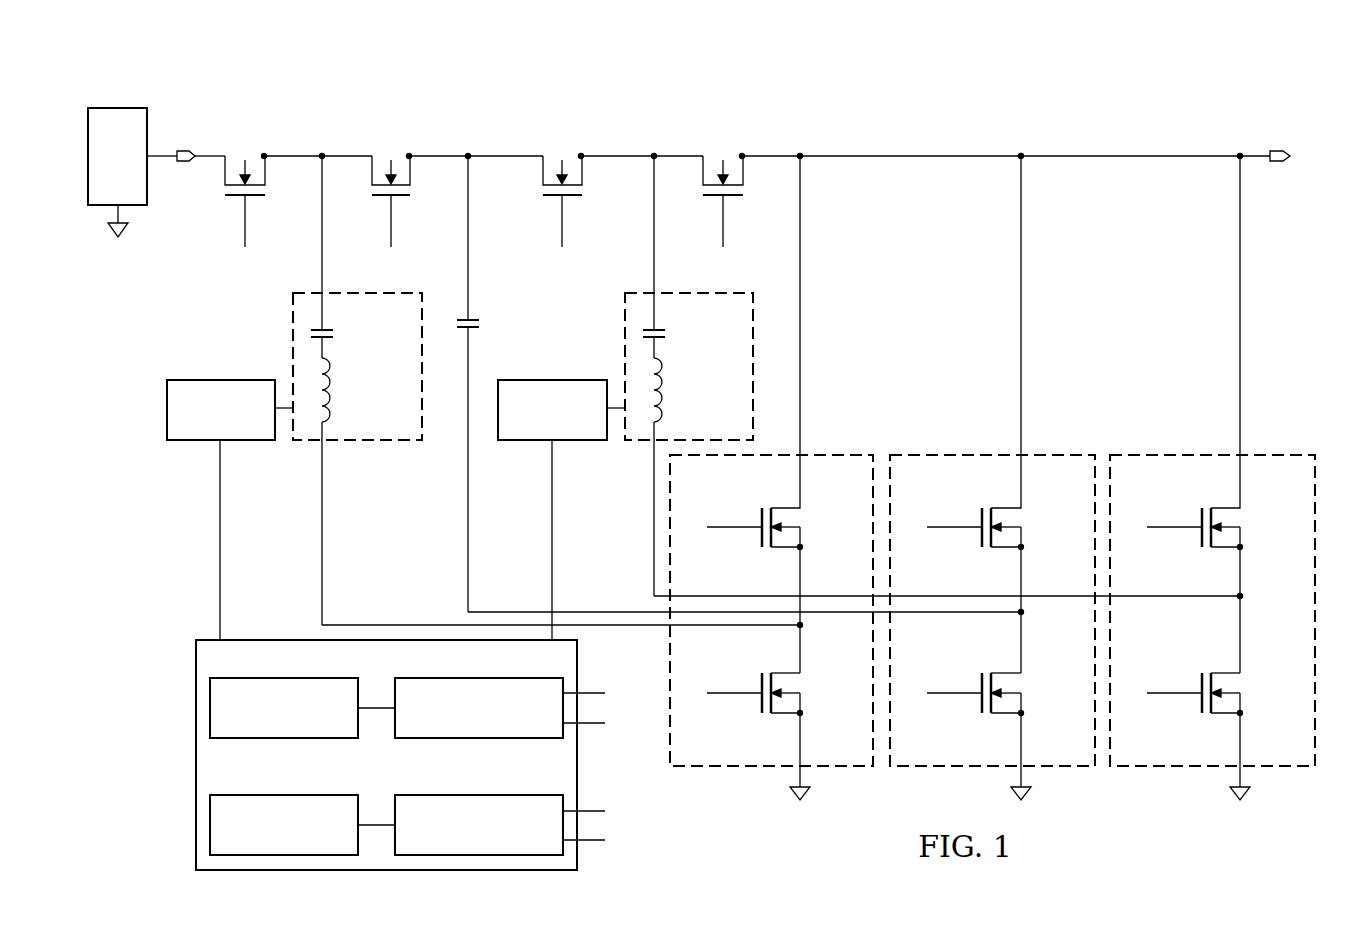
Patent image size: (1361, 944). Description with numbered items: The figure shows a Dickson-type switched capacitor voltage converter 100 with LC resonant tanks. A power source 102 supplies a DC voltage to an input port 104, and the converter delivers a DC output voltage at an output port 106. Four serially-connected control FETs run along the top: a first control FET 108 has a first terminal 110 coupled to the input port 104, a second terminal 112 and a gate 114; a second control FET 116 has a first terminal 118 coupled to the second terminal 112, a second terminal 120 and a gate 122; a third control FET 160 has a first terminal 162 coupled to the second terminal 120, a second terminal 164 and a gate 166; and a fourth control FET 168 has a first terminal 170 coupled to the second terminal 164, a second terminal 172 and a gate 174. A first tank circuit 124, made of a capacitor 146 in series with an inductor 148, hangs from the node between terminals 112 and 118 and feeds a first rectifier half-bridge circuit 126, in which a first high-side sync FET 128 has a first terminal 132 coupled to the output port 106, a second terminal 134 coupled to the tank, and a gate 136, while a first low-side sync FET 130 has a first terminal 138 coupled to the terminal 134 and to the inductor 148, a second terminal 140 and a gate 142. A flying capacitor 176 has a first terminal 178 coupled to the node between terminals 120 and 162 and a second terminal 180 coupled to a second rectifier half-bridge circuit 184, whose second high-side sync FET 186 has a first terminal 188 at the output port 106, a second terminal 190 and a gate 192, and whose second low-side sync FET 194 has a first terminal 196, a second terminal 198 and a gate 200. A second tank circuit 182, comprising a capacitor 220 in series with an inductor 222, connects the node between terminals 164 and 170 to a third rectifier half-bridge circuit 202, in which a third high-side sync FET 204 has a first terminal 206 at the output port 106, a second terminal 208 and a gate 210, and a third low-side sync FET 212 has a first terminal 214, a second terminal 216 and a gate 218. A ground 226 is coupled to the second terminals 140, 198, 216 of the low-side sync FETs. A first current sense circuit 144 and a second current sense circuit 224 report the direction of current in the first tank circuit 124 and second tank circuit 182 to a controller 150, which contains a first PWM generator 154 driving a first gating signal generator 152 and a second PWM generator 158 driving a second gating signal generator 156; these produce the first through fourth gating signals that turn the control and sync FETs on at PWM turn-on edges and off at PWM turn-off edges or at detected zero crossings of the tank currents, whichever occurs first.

The switched capacitor voltage converter 100 is at (1083, 120).
The power source 102 is at (114, 108).
The input port 104 is at (186, 166).
The output port 106 is at (1272, 151).
The first control FET 108 is at (236, 200).
The first terminal of first control FET 110 is at (216, 154).
The second terminal of first control FET 112 is at (276, 154).
The gate of first control FET 114 is at (246, 218).
The second control FET 116 is at (383, 200).
The first terminal of second control FET 118 is at (360, 154).
The second terminal of second control FET 120 is at (421, 154).
The gate of second control FET 122 is at (393, 218).
The first tank circuit 124 is at (292, 342).
The first rectifier half-bridge circuit 126 is at (748, 768).
The first high-side sync FET 128 is at (760, 517).
The first low-side sync FET 130 is at (764, 682).
The first terminal of first high-side sync FET 132 is at (804, 494).
The second terminal of first high-side sync FET 134 is at (804, 560).
The gate of first high-side sync FET 136 is at (744, 534).
The first terminal of first low-side sync FET 138 is at (804, 659).
The second terminal of first low-side sync FET 140 is at (804, 726).
The gate of first low-side sync FET 142 is at (744, 699).
The first current sense circuit 144 is at (205, 443).
The capacitor 146 is at (335, 335).
The inductor 148 is at (337, 381).
The controller 150 is at (195, 755).
The first gating signal generator 152 is at (464, 739).
The first PWM generator 154 is at (266, 739).
The second gating signal generator 156 is at (496, 795).
The second PWM generator 158 is at (301, 795).
The third control FET 160 is at (555, 200).
The first terminal of third control FET 162 is at (530, 154).
The second terminal of third control FET 164 is at (594, 154).
The gate of third control FET 166 is at (566, 218).
The fourth control FET 168 is at (716, 200).
The first terminal of fourth control FET 170 is at (695, 154).
The second terminal of fourth control FET 172 is at (752, 154).
The gate of fourth control FET 174 is at (728, 218).
The flying capacitor 176 is at (479, 326).
The first terminal of flying capacitor 178 is at (471, 295).
The second terminal of flying capacitor 180 is at (471, 346).
The second tank circuit 182 is at (624, 342).
The second rectifier half-bridge circuit 184 is at (1061, 768).
The second high-side sync FET 186 is at (980, 517).
The first terminal of second high-side sync FET 188 is at (1024, 494).
The second terminal of second high-side sync FET 190 is at (1024, 560).
The gate of second high-side sync FET 192 is at (964, 534).
The second low-side sync FET 194 is at (984, 682).
The first terminal of second low-side sync FET 196 is at (1024, 659).
The second terminal of second low-side sync FET 198 is at (1024, 726).
The gate of second low-side sync FET 200 is at (964, 699).
The third rectifier half-bridge circuit 202 is at (1281, 768).
The third high-side sync FET 204 is at (1200, 517).
The first terminal of third high-side sync FET 206 is at (1244, 494).
The second terminal of third high-side sync FET 208 is at (1244, 560).
The gate of third high-side sync FET 210 is at (1184, 534).
The third low-side sync FET 212 is at (1204, 682).
The first terminal of third low-side sync FET 214 is at (1244, 659).
The second terminal of third low-side sync FET 216 is at (1244, 726).
The gate of third low-side sync FET 218 is at (1184, 699).
The capacitor 220 is at (668, 335).
The inductor 222 is at (668, 381).
The second current sense circuit 224 is at (533, 443).
The ground 226 is at (808, 794).